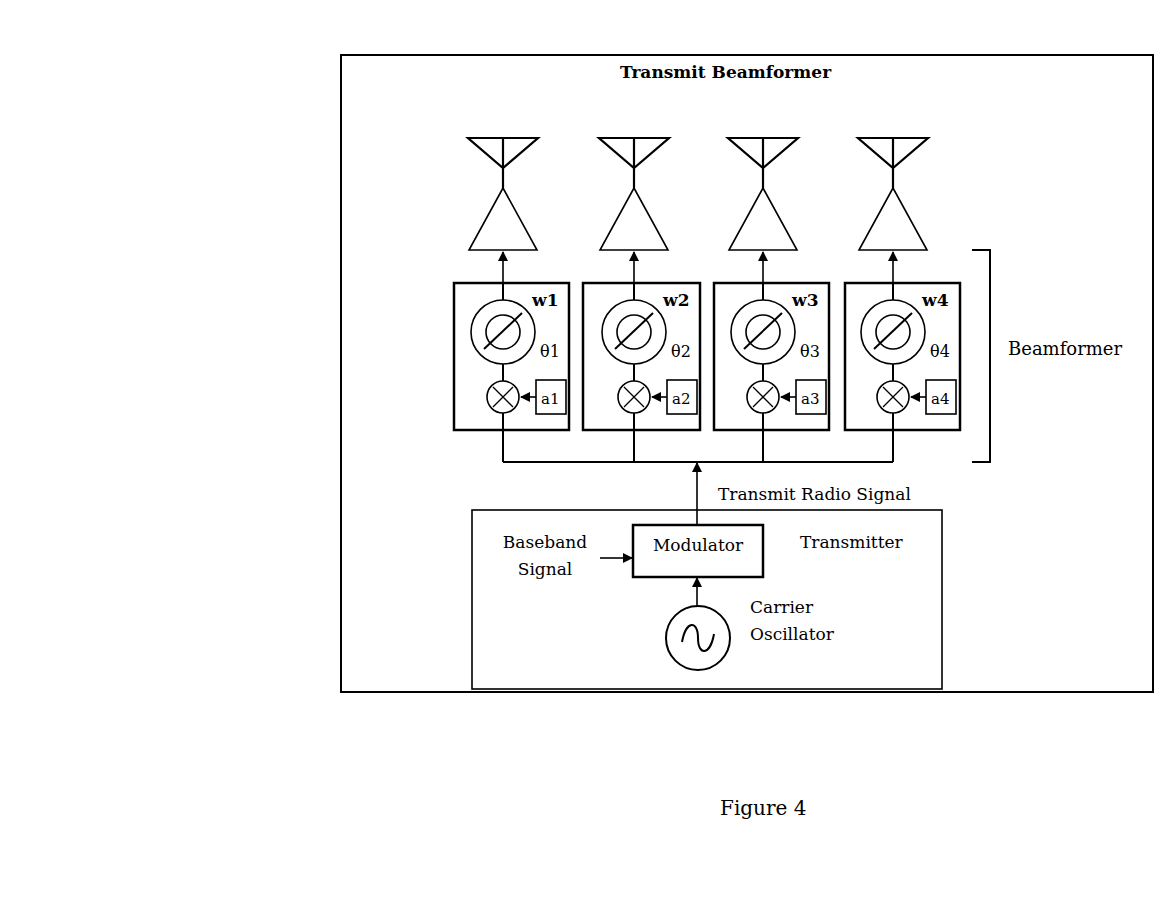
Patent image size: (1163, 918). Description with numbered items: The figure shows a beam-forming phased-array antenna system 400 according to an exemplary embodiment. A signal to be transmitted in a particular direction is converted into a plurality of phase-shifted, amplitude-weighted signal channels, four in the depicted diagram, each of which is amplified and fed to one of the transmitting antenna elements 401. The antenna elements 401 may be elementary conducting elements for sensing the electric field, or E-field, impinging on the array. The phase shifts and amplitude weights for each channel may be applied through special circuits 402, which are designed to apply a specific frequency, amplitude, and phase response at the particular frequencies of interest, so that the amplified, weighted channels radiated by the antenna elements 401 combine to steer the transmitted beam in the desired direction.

The beam-forming phased-array antenna system 400 is at (278, 122).
The transmitting antenna elements 401 is at (848, 112).
The special circuits 402 is at (313, 263).